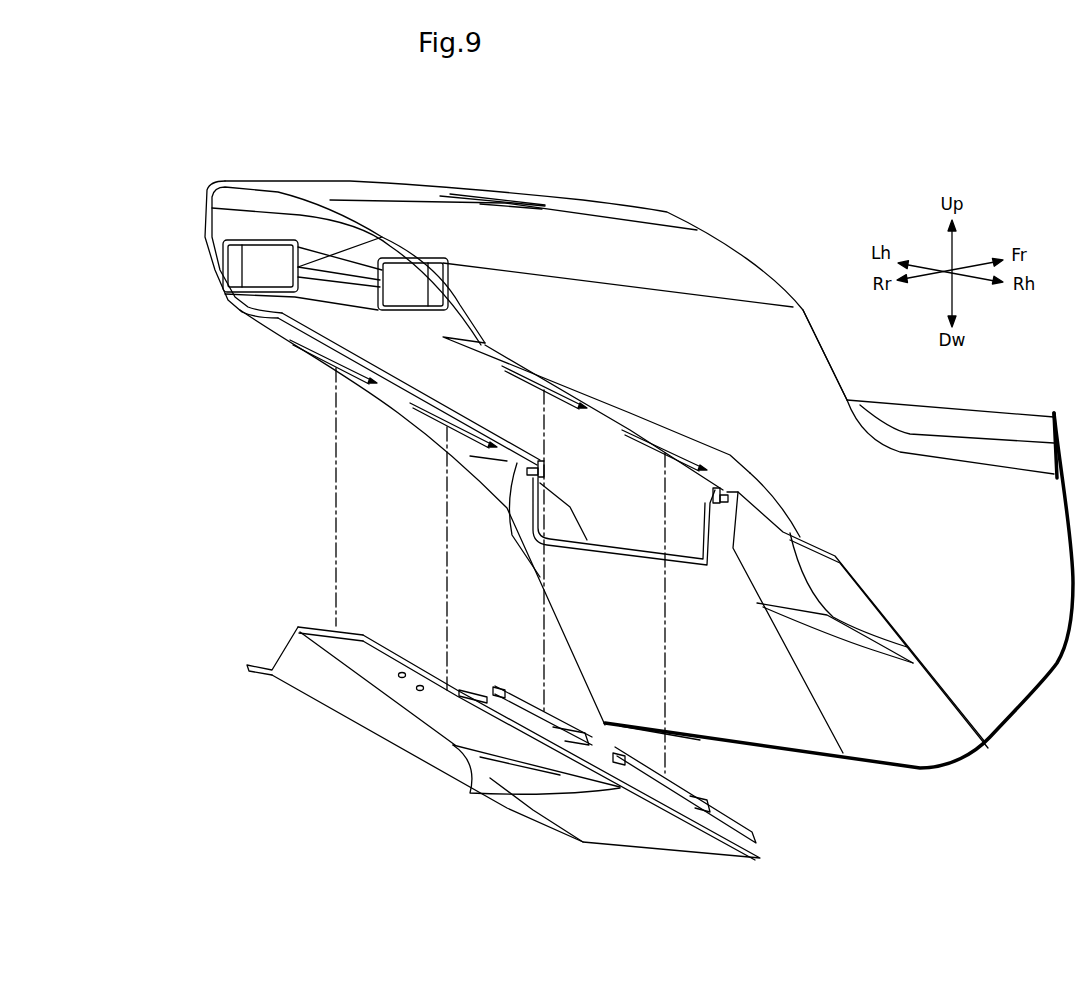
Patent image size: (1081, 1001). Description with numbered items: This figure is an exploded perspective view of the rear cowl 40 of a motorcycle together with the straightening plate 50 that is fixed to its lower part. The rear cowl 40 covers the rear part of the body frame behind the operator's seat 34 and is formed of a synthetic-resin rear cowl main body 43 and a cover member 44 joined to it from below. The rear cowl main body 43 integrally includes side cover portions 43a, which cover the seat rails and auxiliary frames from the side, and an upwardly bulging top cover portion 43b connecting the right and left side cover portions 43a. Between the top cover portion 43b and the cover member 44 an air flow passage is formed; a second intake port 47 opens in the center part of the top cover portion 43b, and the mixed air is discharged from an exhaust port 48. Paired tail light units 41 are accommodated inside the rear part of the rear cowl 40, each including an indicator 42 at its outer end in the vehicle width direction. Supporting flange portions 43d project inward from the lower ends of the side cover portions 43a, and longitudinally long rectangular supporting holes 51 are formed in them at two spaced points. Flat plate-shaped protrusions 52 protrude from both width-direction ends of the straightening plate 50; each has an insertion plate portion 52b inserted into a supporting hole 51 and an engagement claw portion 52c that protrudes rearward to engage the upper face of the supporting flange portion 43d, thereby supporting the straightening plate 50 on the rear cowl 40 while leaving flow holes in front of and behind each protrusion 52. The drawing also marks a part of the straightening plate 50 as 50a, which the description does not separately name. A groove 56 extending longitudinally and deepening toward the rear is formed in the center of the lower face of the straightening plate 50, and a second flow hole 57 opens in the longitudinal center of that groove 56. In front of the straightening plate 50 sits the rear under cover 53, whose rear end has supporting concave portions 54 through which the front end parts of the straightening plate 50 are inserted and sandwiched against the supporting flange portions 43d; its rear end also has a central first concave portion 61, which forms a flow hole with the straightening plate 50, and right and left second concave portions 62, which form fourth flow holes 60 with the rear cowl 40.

The operator's seat 34 is at (1007, 423).
The rear cowl 40 is at (447, 152).
The tail light unit 41 is at (268, 250).
The indicator 42 is at (235, 267).
The rear cowl main body 43 is at (649, 486).
The side cover portion 43a is at (813, 413).
The top cover portion 43b is at (743, 277).
The supporting flange portion 43d is at (383, 392).
The cover member 44 is at (385, 252).
The second intake port 47 is at (490, 203).
The exhaust port 48 is at (218, 212).
The straightening plate 50 is at (348, 628).
The bracket flange 50a is at (318, 623).
The supporting hole 51 is at (309, 352).
The protrusion 52 is at (555, 703).
The insertion plate portion 52b is at (577, 727).
The engagement claw portion 52c is at (487, 688).
The rear under cover 53 is at (800, 733).
The supporting concave portion 54 is at (538, 460).
The groove 56 is at (370, 657).
The second flow hole 57 is at (478, 752).
The fourth flow hole 60 is at (829, 602).
The first concave portion 61 is at (598, 546).
The second concave portion 62 is at (862, 638).